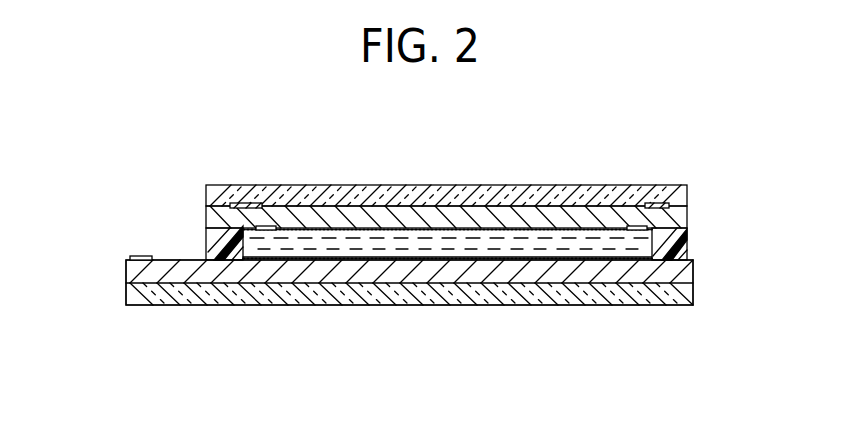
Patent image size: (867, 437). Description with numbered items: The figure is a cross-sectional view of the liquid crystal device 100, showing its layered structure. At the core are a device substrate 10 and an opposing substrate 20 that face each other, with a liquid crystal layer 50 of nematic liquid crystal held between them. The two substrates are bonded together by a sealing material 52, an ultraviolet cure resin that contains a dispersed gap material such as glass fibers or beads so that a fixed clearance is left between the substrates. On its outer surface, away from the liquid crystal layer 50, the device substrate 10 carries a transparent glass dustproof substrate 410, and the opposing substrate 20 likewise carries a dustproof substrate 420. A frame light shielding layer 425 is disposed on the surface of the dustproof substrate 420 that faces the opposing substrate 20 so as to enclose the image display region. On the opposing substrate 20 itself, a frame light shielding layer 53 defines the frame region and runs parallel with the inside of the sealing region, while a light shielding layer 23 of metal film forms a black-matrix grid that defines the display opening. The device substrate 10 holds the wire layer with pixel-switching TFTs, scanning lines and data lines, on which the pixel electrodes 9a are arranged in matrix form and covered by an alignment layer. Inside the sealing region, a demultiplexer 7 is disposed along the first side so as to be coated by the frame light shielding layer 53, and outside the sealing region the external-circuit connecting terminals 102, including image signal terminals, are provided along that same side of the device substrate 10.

The liquid crystal device 100 is at (703, 108).
The dustproof substrate 420 is at (678, 197).
The opposing substrate 20 is at (373, 215).
The light shielding layer 23 is at (435, 228).
The frame light shielding layer 425 is at (242, 204).
The frame light shielding layer 53 is at (267, 227).
The sealing material 52 is at (206, 243).
The liquid crystal layer 50 is at (425, 248).
The demultiplexer 7 is at (260, 261).
The pixel electrodes 9a is at (592, 261).
The device substrate 10 is at (502, 277).
The dustproof substrate 410 is at (678, 293).
The external-circuit connecting terminals 102 is at (137, 256).